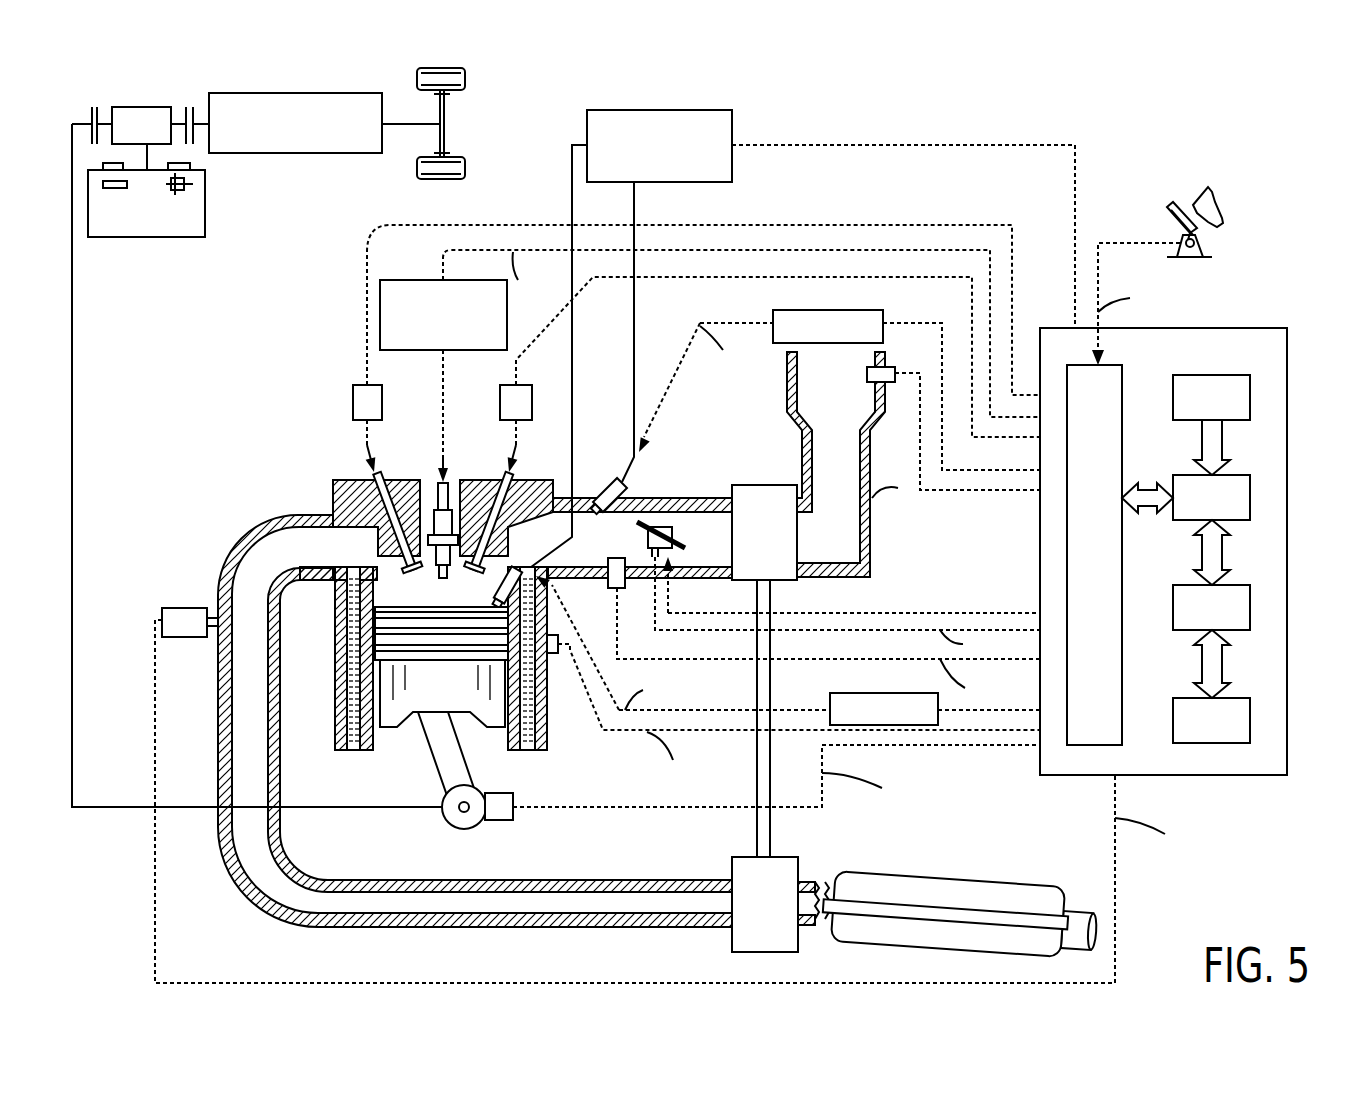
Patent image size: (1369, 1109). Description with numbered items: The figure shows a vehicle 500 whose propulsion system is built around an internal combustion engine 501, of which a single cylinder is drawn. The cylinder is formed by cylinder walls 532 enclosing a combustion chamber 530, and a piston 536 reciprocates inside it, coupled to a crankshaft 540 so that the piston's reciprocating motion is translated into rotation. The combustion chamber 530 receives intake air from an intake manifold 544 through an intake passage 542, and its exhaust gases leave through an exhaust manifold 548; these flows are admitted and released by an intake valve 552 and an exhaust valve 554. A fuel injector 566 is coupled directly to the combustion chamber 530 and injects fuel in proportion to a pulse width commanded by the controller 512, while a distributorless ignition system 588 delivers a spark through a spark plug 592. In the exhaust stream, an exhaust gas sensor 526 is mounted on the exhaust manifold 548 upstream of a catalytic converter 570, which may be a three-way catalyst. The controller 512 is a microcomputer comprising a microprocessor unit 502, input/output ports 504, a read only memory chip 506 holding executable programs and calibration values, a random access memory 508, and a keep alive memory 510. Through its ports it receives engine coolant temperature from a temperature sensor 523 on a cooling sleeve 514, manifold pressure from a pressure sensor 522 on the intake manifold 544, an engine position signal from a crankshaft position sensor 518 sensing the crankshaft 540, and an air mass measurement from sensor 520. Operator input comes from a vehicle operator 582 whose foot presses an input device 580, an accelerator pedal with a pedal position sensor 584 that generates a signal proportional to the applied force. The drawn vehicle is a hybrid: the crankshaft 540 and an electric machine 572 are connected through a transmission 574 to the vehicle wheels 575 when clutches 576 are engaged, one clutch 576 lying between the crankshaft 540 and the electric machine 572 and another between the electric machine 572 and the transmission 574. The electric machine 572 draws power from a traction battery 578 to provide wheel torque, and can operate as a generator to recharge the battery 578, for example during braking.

The vehicle 500 is at (1214, 107).
The internal combustion engine 501 is at (250, 423).
The microprocessor unit 502 is at (1238, 475).
The input/output ports 504 is at (1123, 373).
The read only memory chip 506 is at (1238, 375).
The random access memory 508 is at (1238, 585).
The keep alive memory 510 is at (1238, 698).
The controller 512 is at (1262, 328).
The cooling sleeve 514 is at (550, 718).
The crankshaft position sensor 518 is at (500, 822).
The air mass sensor 520 is at (889, 366).
The pressure sensor 522 is at (620, 592).
The temperature sensor 523 is at (555, 656).
The exhaust gas sensor 526 is at (162, 608).
The combustion chamber 530 is at (500, 730).
The cylinder walls 532 is at (378, 737).
The piston 536 is at (423, 695).
The crankshaft 540 is at (450, 826).
The intake passage 542 is at (852, 403).
The intake manifold 544 is at (722, 549).
The exhaust manifold 548 is at (318, 559).
The intake valve 552 is at (478, 486).
The exhaust valve 554 is at (333, 513).
The fuel injector 566 is at (512, 566).
The catalytic converter 570 is at (612, 484).
The electric machine 572 is at (157, 107).
The transmission 574 is at (357, 153).
The vehicle wheels 575 is at (445, 178).
The clutch 576 is at (92, 107).
The traction battery 578 is at (140, 237).
The input device 580 is at (1170, 210).
The vehicle operator 582 is at (1218, 203).
The pedal position sensor 584 is at (1197, 242).
The distributorless ignition system 588 is at (393, 280).
The spark plug 592 is at (437, 484).